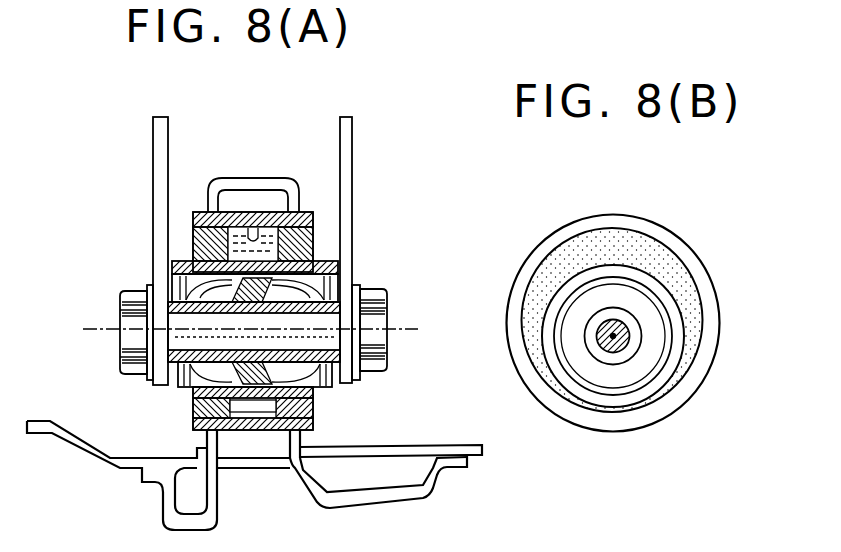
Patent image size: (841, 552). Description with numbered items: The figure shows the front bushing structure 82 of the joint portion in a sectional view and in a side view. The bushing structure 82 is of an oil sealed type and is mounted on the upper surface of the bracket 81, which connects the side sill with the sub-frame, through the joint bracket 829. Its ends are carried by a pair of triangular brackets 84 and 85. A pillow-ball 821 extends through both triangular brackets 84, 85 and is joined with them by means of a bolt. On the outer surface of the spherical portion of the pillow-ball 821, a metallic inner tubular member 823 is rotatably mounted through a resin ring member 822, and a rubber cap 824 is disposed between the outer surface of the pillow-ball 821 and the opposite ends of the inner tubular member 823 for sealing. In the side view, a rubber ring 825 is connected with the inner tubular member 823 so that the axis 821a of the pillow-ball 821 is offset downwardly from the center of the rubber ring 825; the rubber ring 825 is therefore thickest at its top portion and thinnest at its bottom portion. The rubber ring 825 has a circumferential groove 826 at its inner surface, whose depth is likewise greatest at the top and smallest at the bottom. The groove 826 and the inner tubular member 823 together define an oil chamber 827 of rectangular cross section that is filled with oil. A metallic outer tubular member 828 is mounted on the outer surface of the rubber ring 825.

In FIG. 8A, the bracket 81 is at (78, 444).
In FIG. 8A, the bushing structure 82 is at (167, 397).
In FIG. 8A, the triangular bracket 84 is at (154, 140).
In FIG. 8A, the triangular bracket 85 is at (353, 138).
In FIG. 8A, the pillow-ball 821 is at (168, 332).
In FIG. 8B, the pillow-ball 821 is at (623, 350).
In FIG. 8A, the axis of the pillow-ball 821a is at (398, 334).
In FIG. 8B, the axis of the pillow-ball 821a is at (613, 336).
In FIG. 8A, the resin ring member 822 is at (178, 283).
In FIG. 8A, the inner tubular member 823 is at (215, 258).
In FIG. 8B, the inner tubular member 823 is at (667, 297).
In FIG. 8A, the rubber cap 824 is at (332, 275).
In FIG. 8B, the rubber cap 824 is at (653, 350).
In FIG. 8A, the rubber ring 825 is at (313, 240).
In FIG. 8B, the rubber ring 825 is at (657, 258).
In FIG. 8A, the circumferential groove 826 is at (272, 240).
In FIG. 8A, the oil chamber 827 is at (253, 236).
In FIG. 8B, the metallic outer tubular member 828 is at (627, 220).
In FIG. 8A, the joint bracket 829 is at (240, 160).